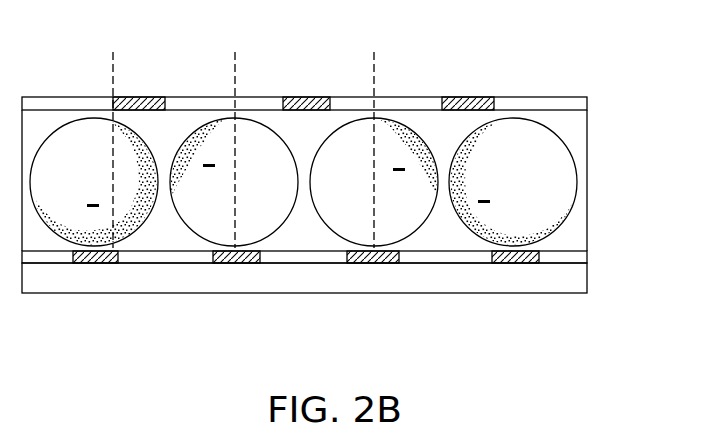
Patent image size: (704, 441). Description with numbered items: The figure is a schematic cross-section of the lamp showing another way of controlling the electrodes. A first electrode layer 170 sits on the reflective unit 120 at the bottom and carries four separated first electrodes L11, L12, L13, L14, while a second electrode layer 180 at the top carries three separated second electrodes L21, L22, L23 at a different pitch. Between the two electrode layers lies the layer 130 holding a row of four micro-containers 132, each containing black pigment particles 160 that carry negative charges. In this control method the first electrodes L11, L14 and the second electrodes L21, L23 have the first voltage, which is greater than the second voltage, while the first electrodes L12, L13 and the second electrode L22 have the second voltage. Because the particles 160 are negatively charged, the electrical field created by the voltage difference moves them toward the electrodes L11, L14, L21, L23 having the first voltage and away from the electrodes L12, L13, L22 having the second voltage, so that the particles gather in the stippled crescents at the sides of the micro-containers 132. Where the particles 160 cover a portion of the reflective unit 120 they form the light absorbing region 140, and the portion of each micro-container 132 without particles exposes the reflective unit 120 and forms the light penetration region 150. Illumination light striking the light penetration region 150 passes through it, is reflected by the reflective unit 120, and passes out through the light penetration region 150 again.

The reflective unit 120 is at (579, 278).
The display medium layer 130 is at (587, 173).
The micro-container 132 is at (563, 137).
The light absorbing region 140 is at (223, 50).
The light penetration region 150 is at (362, 50).
The pigment particles 160 is at (461, 218).
The first electrode layer 170 is at (587, 257).
The second electrode layer 180 is at (587, 101).
The first electrode L11 is at (118, 263).
The first electrode L12 is at (260, 263).
The first electrode L13 is at (397, 263).
The first electrode L14 is at (539, 263).
The second electrode L21 is at (158, 97).
The second electrode L22 is at (326, 97).
The second electrode L23 is at (450, 97).